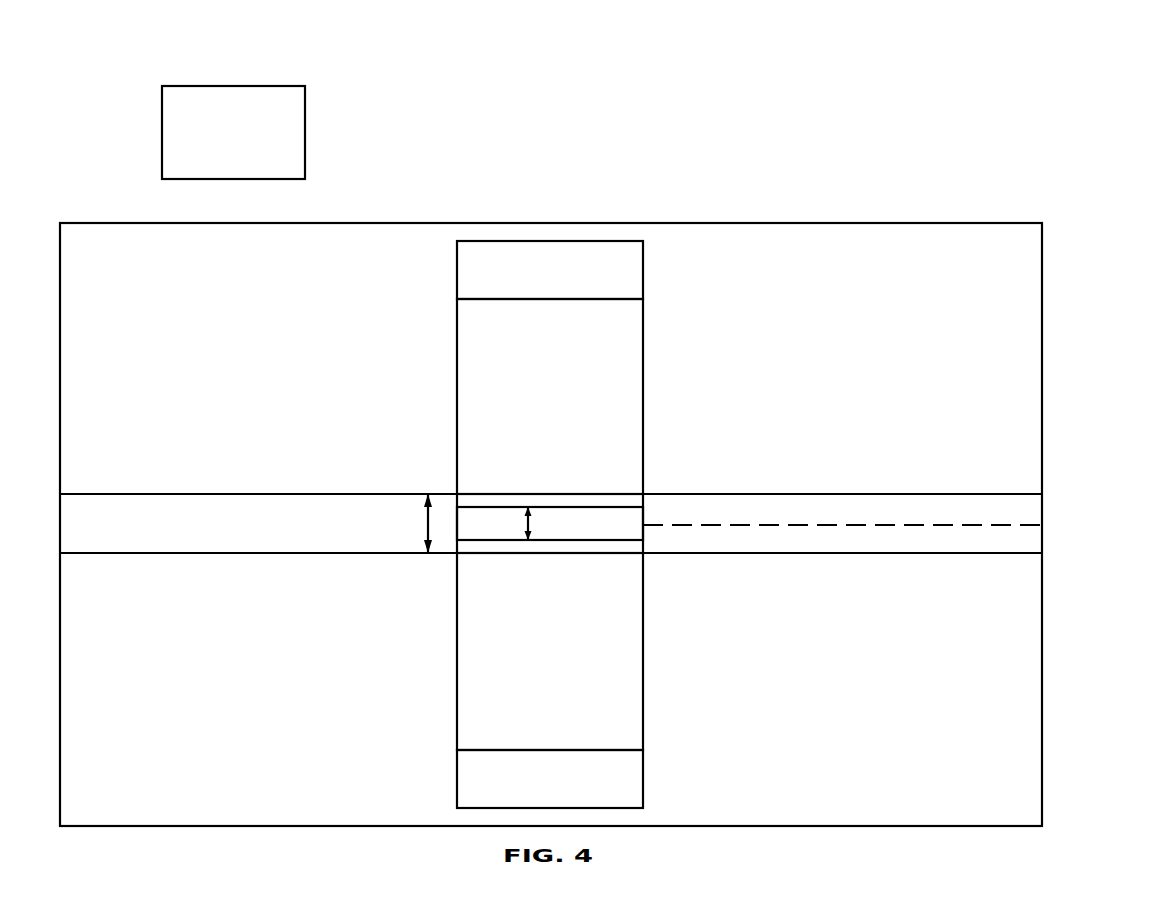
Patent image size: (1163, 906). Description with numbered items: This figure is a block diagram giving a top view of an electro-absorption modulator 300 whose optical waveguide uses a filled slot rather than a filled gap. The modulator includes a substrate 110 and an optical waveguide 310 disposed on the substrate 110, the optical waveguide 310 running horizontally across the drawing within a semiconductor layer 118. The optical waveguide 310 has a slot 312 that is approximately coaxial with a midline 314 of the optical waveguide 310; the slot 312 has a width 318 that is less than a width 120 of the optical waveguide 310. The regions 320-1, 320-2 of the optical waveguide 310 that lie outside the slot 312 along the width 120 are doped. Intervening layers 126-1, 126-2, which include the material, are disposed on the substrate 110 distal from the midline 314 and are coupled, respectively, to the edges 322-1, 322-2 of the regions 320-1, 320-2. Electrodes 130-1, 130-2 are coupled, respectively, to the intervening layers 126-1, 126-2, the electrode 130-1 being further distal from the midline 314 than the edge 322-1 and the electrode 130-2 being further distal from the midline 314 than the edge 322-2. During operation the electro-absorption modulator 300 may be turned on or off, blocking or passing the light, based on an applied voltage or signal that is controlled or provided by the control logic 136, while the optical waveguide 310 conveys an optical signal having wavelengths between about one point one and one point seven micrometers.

The substrate 110 is at (551, 524).
The control logic 136 is at (233, 132).
The electro-absorption modulator 300 is at (903, 115).
The electrode 130-1 is at (550, 270).
The electrode 130-2 is at (550, 779).
The intervening layer 126-1 is at (550, 396).
The intervening layer 126-2 is at (550, 651).
The optical waveguide 310 is at (551, 523).
The region 320-1 is at (624, 502).
The region 320-2 is at (624, 547).
The slot 312 is at (560, 541).
The semiconductor layer 118 is at (617, 529).
The midline 314 is at (827, 525).
The edge 322-1 is at (503, 493).
The edge 322-2 is at (500, 554).
The width 318 is at (531, 511).
The width 120 is at (425, 527).